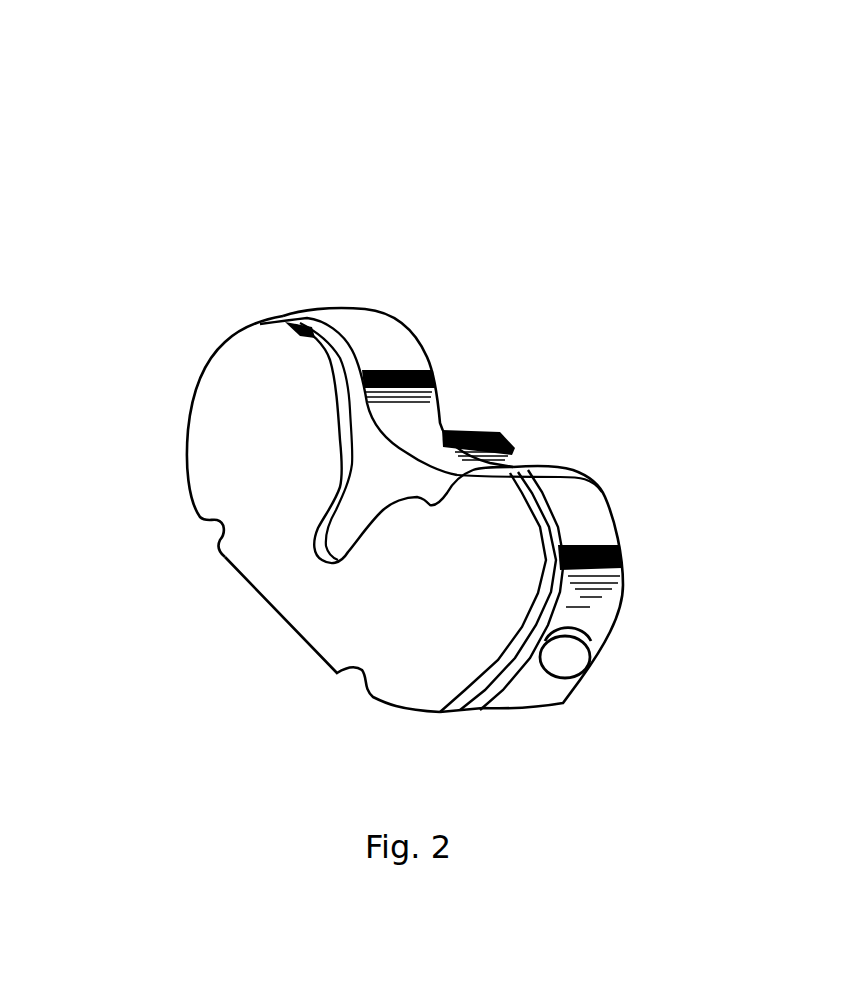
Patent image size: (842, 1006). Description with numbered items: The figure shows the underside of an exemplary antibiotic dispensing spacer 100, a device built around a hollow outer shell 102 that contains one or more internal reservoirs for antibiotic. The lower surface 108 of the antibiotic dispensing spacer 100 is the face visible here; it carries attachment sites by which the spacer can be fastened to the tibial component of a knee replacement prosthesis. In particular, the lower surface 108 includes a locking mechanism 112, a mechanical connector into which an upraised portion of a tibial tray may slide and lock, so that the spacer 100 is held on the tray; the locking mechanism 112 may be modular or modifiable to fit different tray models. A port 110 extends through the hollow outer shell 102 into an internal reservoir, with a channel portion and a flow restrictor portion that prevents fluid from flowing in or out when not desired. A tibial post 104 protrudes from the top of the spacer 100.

The antibiotic dispensing spacer 100 is at (322, 367).
The hollow outer shell 102 is at (236, 318).
The tibial post 104 is at (515, 448).
The lower surface 108 is at (352, 602).
The port 110 is at (566, 656).
The locking mechanism 112 is at (382, 466).